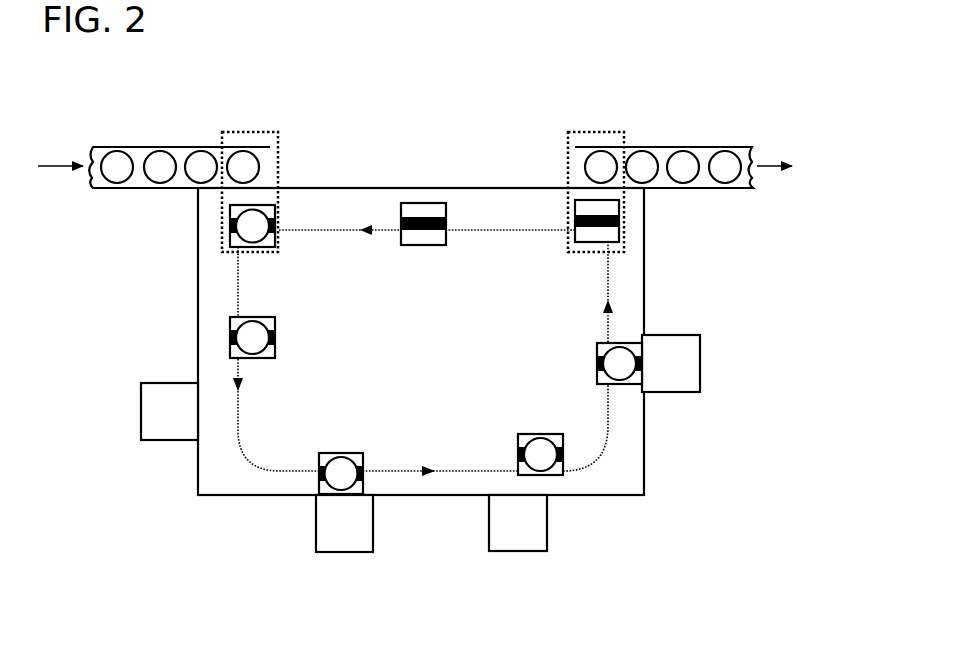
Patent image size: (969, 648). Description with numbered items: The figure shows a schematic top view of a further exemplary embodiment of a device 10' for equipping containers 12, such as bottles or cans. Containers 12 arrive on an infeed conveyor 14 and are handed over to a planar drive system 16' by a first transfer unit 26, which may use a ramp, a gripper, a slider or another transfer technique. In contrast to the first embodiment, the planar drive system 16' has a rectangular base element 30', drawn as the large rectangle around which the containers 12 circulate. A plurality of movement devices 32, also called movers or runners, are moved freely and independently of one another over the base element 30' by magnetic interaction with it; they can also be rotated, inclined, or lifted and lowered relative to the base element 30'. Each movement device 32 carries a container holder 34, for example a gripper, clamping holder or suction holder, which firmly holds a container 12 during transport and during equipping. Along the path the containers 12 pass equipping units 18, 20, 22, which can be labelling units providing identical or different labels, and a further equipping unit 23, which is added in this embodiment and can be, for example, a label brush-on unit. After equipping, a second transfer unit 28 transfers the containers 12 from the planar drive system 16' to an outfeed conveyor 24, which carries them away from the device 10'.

The device for equipping containers 10' is at (473, 47).
The container 12 is at (243, 185).
The infeed conveyor 14 is at (133, 147).
The planar drive system 16' is at (352, 427).
The equipping unit 18 is at (141, 405).
The equipping unit 20 is at (345, 552).
The equipping unit 22 is at (530, 551).
The further equipping unit 23 is at (700, 350).
The outfeed conveyor 24 is at (712, 147).
The first transfer unit 26 is at (247, 132).
The second transfer unit 28 is at (610, 132).
The rectangular base element 30' is at (376, 375).
The movement device 32 is at (235, 236).
The container holder 34 is at (275, 228).